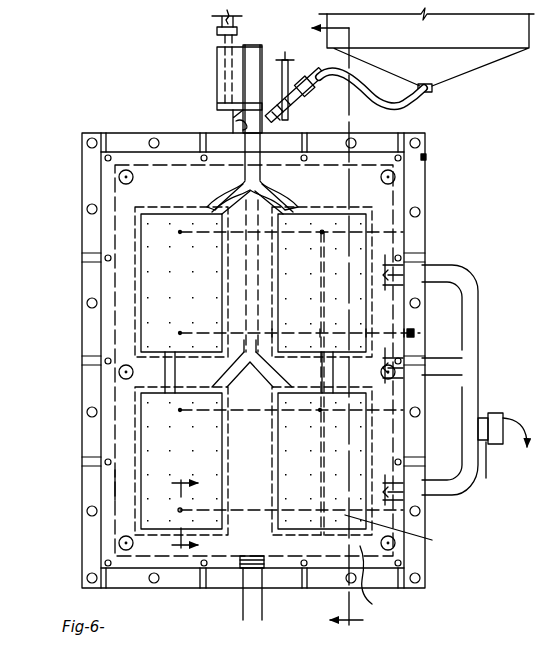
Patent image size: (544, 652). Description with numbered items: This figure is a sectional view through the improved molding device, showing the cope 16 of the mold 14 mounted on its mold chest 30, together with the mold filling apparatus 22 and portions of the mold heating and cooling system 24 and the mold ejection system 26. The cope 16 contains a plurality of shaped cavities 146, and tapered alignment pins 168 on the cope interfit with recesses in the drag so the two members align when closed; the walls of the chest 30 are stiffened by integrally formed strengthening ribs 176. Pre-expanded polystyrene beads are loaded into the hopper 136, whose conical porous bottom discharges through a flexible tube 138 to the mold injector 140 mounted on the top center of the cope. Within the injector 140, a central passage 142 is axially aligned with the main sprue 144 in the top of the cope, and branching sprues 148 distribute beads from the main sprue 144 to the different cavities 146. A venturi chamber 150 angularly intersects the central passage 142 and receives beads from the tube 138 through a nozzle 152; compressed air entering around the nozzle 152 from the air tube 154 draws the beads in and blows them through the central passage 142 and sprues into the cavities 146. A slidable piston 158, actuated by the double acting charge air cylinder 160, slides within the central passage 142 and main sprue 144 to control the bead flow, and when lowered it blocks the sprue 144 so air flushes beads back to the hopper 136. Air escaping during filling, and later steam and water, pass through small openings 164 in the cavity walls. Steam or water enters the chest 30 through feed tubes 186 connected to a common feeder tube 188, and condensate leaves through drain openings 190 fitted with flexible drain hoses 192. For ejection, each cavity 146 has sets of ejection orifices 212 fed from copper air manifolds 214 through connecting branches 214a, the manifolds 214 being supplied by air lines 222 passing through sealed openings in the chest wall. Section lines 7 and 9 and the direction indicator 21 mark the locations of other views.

The mold chest 30 is at (425, 170).
The tapered alignment pins 168 is at (119, 177).
The shaped cavities 146 is at (160, 258).
The sets of ejection orifices 212 is at (320, 412).
The air manifolds 214 is at (322, 440).
The connecting branches 214a is at (200, 505).
The air lines 222 is at (420, 333).
The main sprue 144 is at (247, 170).
The branching sprues 148 is at (272, 197).
The mold filling apparatus 22 is at (241, 76).
The mold injector 140 is at (230, 106).
The central passage 142 is at (240, 128).
The slidable piston 158 is at (224, 60).
The double acting charge air cylinder 160 is at (215, 20).
The air tube 154 is at (280, 72).
The nozzle 152 is at (306, 86).
The venturi chamber 150 is at (285, 122).
The hopper 136 is at (468, 62).
The tube 138 is at (410, 100).
The strengthening ribs 176 is at (426, 157).
The feed tubes 186 is at (445, 266).
The mold heating and cooling system 24 is at (502, 447).
The flow direction 21 is at (523, 430).
The common feeder tube 188 is at (486, 478).
The small openings 164 is at (147, 498).
The drain openings 190 is at (258, 556).
The flexible drain hoses 192 is at (248, 616).
The cope 16 is at (452, 446).
The mold ejection system 26 is at (332, 512).
The mold 14 is at (531, 331).
The section line 7 is at (329, 327).
The section line 9 is at (191, 516).